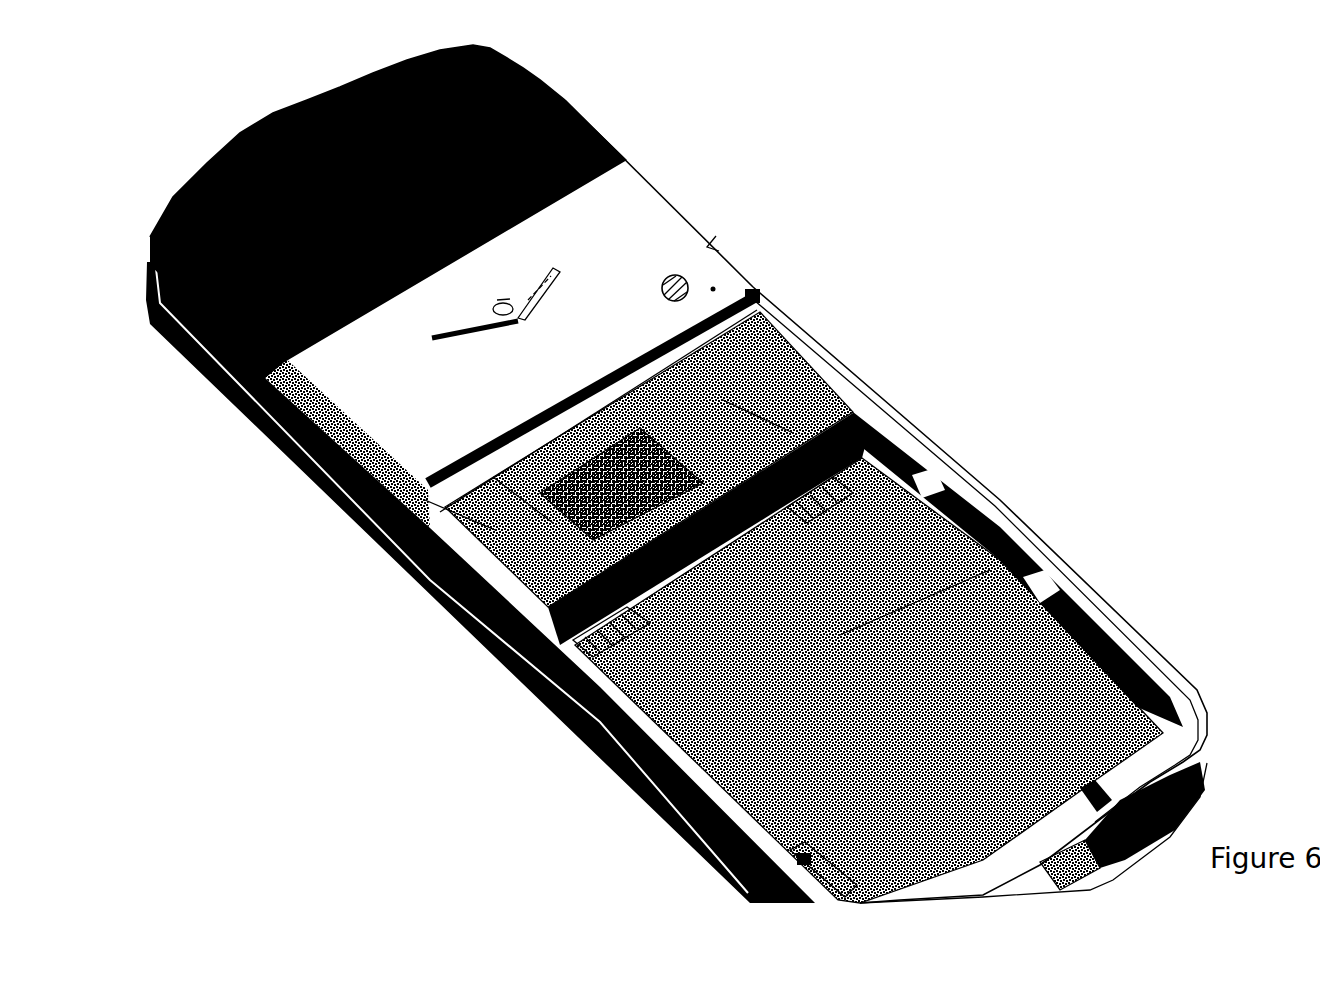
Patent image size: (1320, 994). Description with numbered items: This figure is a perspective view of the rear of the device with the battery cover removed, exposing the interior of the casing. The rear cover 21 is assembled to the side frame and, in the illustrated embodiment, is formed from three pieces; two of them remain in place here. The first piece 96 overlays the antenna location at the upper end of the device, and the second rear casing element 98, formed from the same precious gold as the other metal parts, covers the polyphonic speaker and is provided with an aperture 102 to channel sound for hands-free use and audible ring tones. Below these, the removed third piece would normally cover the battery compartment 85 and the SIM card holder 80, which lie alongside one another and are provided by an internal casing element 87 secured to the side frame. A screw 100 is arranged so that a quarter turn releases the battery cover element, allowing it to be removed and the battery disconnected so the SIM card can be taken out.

The first piece 96 is at (584, 104).
The aperture 102 is at (525, 305).
The rear cover 21 is at (710, 245).
The screw 100 is at (714, 287).
The second rear casing element 98 is at (687, 280).
The SIM card holder 80 is at (720, 383).
The internal casing element 87 is at (990, 517).
The battery compartment 85 is at (1020, 560).